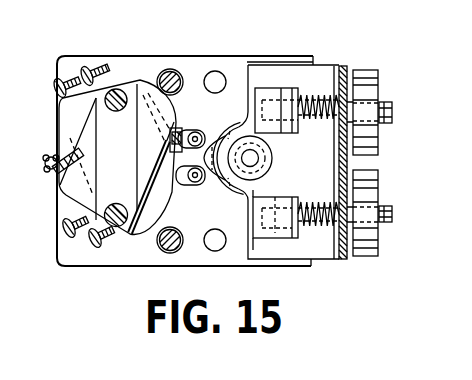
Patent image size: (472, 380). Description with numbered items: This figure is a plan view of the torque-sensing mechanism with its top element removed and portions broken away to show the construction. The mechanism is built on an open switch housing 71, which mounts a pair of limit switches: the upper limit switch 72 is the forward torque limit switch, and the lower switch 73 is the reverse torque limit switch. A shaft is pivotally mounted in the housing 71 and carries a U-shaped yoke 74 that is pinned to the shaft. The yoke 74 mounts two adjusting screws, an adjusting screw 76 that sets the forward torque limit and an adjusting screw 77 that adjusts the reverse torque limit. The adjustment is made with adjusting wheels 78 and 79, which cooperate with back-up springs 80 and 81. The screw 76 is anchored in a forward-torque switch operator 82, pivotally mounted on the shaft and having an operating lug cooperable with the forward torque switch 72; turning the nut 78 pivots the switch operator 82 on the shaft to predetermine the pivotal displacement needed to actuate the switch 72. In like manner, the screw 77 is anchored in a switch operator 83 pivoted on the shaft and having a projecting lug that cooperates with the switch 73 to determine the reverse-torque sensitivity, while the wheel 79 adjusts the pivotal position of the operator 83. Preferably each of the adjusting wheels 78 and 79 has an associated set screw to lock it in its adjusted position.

The switch housing 71 is at (150, 56).
The forward torque limit switch 72 is at (140, 81).
The reverse torque limit switch 73 is at (72, 118).
The U-shaped yoke 74 is at (343, 66).
The adjusting screw 76 is at (390, 121).
The adjusting screw 77 is at (380, 208).
The adjusting wheel 78 is at (378, 82).
The adjusting wheel 79 is at (378, 243).
The back-up spring 80 is at (313, 98).
The back-up spring 81 is at (318, 226).
The forward-torque switch operator 82 is at (260, 92).
The switch operator 83 is at (268, 238).